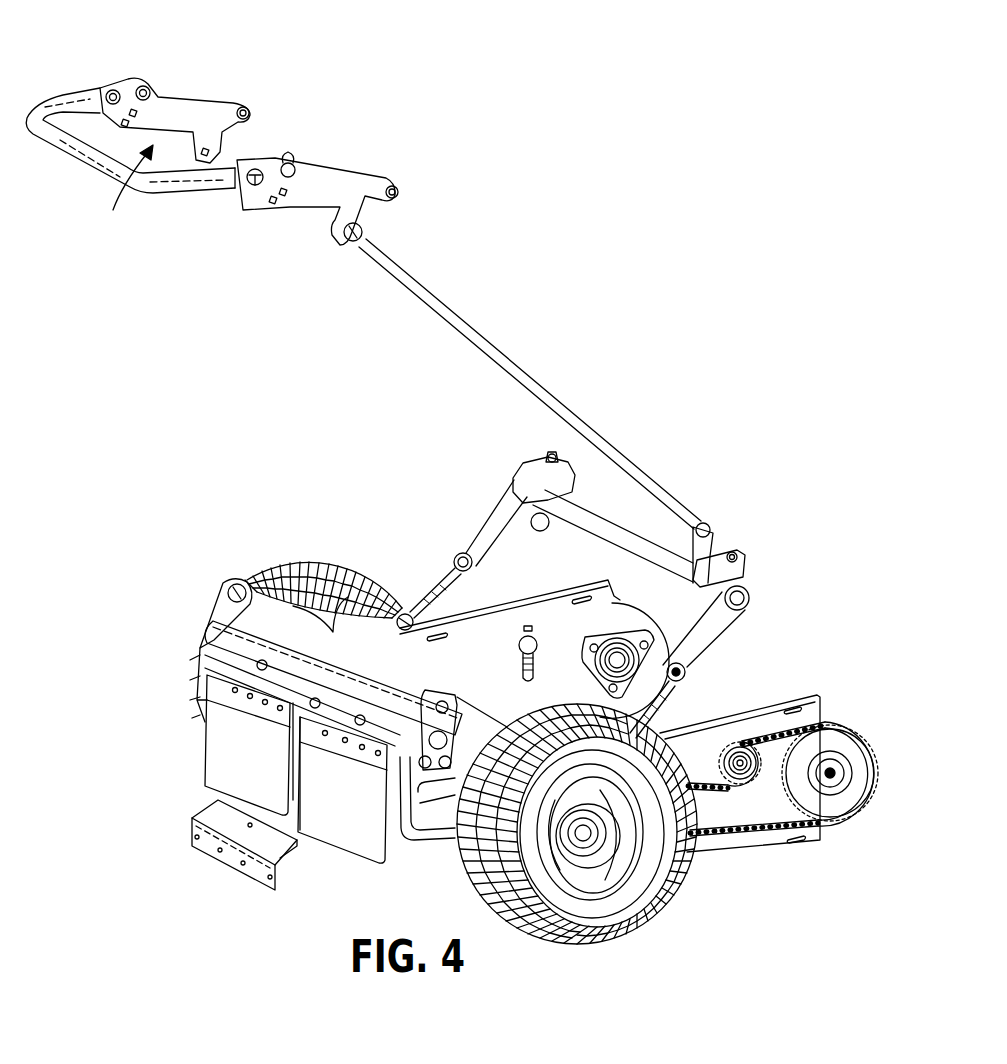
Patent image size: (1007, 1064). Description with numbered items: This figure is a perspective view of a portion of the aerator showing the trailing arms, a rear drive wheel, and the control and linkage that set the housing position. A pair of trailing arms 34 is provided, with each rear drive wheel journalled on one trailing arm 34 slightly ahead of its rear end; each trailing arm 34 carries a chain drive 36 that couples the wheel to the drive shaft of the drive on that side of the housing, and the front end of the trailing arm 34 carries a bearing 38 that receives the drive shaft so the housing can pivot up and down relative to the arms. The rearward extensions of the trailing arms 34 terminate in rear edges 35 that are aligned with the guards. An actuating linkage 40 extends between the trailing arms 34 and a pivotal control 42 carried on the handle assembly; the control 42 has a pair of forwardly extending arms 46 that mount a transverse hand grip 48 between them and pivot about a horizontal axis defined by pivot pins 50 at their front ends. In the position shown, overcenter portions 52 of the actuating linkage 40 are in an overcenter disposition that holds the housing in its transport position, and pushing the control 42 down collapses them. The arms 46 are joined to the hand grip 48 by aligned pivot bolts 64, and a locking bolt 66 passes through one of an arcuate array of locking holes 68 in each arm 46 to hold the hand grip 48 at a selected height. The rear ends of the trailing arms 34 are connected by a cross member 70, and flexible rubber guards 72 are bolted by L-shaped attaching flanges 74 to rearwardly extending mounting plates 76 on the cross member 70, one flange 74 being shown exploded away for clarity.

The trailing arm 34 is at (489, 660).
The rear edge 35 is at (402, 818).
The chain drive 36 is at (740, 836).
The bearing 38 is at (605, 645).
The actuating linkage 40 is at (592, 413).
The control 42 is at (148, 62).
The arm 46 is at (198, 113).
The hand grip 48 is at (72, 96).
The pivot pin 50 is at (252, 115).
The overcenter portion 52 is at (450, 544).
The pivot bolt 64 is at (113, 90).
The locking bolt 66 is at (150, 91).
The locking hole 68 is at (275, 203).
The cross member 70 is at (340, 690).
The guard 72 is at (222, 733).
The L-shaped attaching flange 74 is at (225, 660).
The mounting plate 76 is at (375, 722).